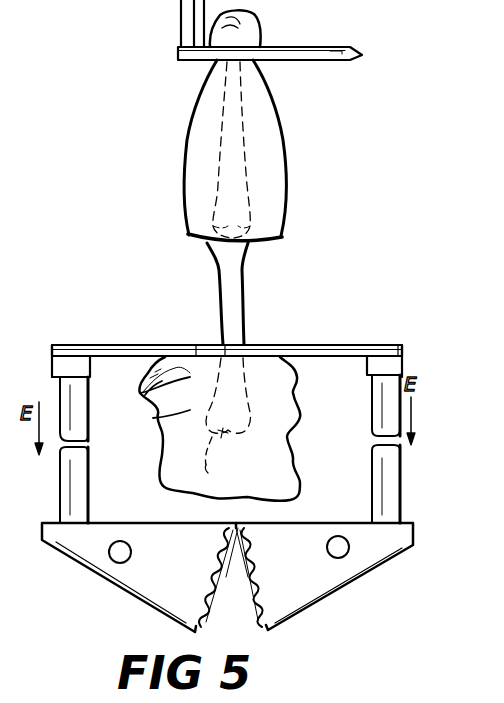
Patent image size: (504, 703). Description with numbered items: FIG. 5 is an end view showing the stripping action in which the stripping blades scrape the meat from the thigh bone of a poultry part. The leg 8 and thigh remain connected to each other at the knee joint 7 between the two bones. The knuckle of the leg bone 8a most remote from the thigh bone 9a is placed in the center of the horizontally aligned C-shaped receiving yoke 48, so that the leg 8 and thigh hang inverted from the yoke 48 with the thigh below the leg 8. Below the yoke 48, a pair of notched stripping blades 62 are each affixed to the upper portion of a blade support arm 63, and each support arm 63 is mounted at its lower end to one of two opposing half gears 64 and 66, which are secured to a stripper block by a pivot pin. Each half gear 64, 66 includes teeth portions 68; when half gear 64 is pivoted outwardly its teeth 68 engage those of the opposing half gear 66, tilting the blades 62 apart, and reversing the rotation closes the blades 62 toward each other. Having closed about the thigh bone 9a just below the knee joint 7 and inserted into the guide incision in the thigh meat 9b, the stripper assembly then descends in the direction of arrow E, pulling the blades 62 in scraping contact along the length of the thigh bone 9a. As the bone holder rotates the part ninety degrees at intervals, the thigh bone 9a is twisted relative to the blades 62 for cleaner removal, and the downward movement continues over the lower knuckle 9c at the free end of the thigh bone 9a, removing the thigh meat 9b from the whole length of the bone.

The receiving yoke 48 is at (278, 47).
The leg 8 is at (279, 124).
The leg bone 8a is at (235, 158).
The knee joint 7 is at (210, 222).
The thigh bone 9a is at (244, 298).
The thigh meat 9b is at (299, 416).
The lower knuckle 9c is at (219, 476).
The stripping blades 62 is at (133, 315).
The blade support arm 63 is at (82, 408).
The half gear 64 is at (165, 600).
The half gear 66 is at (307, 592).
The teeth portions 68 is at (240, 604).